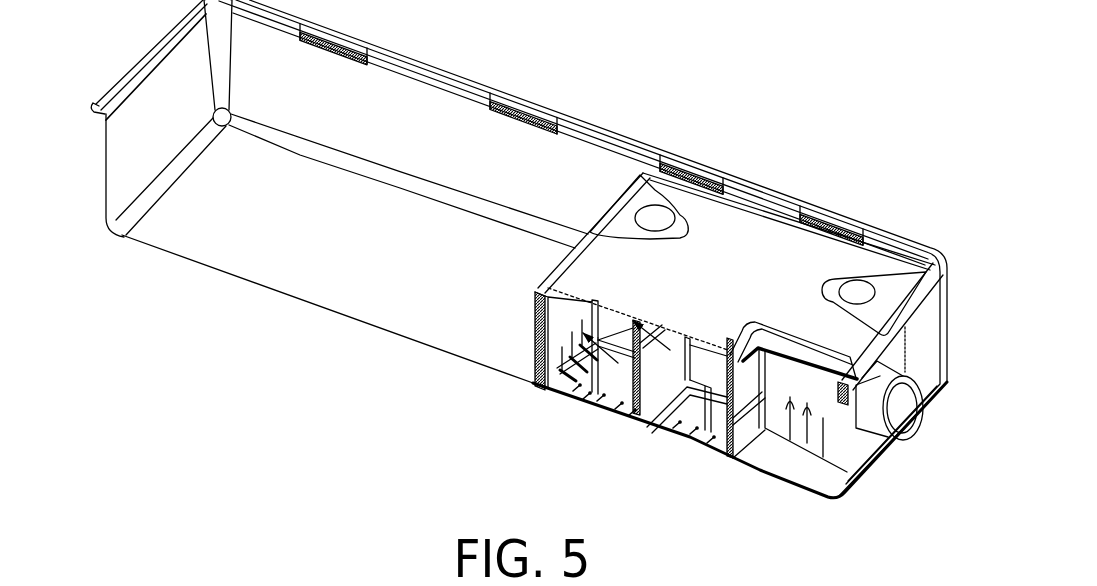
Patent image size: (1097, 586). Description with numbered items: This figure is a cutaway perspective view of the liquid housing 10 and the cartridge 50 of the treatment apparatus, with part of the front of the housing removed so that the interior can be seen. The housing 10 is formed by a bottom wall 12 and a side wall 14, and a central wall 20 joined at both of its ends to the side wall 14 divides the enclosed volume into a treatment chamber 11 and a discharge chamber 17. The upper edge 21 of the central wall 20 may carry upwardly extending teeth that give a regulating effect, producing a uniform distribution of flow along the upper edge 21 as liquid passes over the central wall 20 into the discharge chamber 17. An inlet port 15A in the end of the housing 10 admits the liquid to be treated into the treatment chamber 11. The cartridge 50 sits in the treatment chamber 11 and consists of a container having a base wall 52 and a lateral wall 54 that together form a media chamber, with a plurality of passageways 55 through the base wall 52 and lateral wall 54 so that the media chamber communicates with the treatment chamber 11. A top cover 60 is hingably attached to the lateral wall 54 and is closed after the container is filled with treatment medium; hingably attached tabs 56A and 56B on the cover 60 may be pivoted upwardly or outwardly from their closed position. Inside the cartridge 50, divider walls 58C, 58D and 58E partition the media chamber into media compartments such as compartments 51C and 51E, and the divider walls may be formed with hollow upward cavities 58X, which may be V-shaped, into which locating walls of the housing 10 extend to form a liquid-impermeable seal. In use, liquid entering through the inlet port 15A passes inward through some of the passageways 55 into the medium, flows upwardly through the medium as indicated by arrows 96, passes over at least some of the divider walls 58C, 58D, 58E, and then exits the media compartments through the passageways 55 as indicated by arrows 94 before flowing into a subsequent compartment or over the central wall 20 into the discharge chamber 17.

The housing 10 is at (247, 289).
The treatment chamber 11 is at (808, 470).
The bottom wall 12 is at (373, 303).
The side wall 14 is at (122, 143).
The inlet port 15A is at (906, 412).
The discharge chamber 17 is at (190, 242).
The central wall 20 is at (538, 345).
The upper edge 21 is at (540, 297).
The cartridge 50 is at (766, 433).
The media compartment 51C is at (713, 430).
The media compartment 51E is at (593, 390).
The base wall 52 is at (653, 423).
The lateral wall 54 is at (555, 308).
The passageways 55 is at (547, 383).
The tab 56A is at (887, 287).
The tab 56B is at (643, 197).
The divider wall 58C is at (665, 417).
The divider wall 58D is at (615, 320).
The divider wall 58E is at (713, 353).
The hollow upward cavity 58X is at (641, 370).
The top cover 60 is at (747, 240).
The arrows 94 is at (610, 356).
The arrows 96 is at (667, 347).